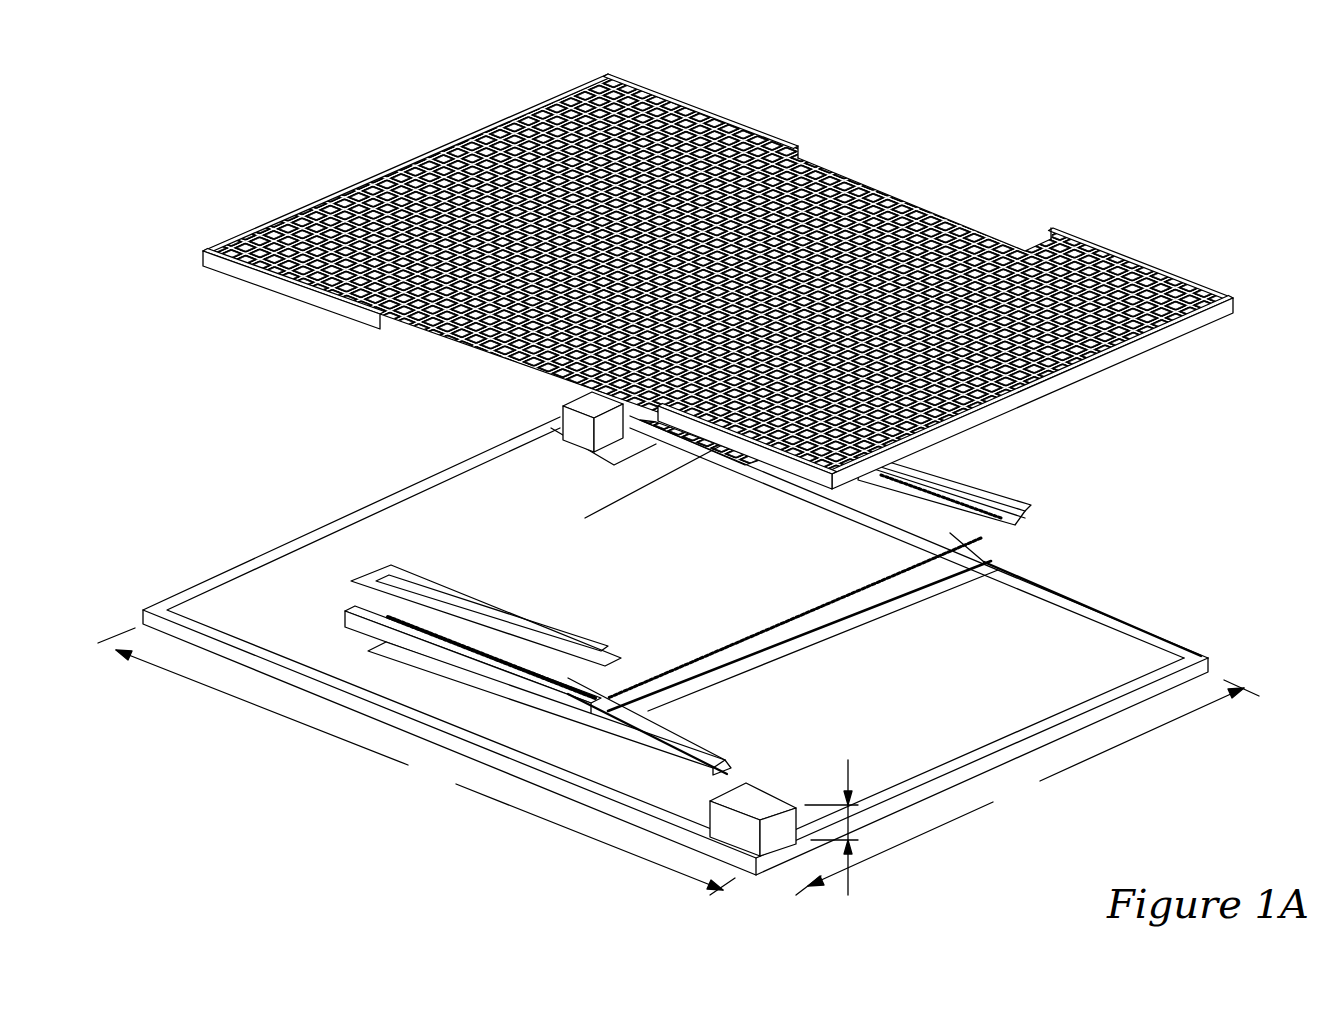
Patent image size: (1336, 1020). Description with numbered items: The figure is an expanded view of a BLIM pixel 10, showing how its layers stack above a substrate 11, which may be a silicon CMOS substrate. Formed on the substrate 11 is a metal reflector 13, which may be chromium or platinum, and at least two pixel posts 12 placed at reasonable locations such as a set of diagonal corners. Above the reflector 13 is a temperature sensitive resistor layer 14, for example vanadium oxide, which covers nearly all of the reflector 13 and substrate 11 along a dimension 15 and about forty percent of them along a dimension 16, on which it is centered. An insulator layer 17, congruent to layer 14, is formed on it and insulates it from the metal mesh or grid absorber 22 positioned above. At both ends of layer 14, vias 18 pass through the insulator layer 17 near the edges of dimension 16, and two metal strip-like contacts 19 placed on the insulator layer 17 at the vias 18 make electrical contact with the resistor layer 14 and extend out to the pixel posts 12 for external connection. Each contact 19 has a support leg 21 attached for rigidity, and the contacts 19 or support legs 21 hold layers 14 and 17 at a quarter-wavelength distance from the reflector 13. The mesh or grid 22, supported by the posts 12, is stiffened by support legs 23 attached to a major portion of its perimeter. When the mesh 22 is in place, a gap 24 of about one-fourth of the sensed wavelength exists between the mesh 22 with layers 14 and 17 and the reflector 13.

The BLIM pixel 10 is at (1016, 136).
The substrate 11 is at (1203, 650).
The pixel posts 12 is at (568, 401).
The metal reflector 13 is at (1093, 610).
The temperature sensitive resistor layer 14 is at (900, 581).
The dimension 15 is at (1027, 787).
The dimension 16 is at (416, 761).
The insulator layer 17 is at (973, 531).
The vias 18 is at (342, 603).
The metal strip-like contacts 19 is at (358, 566).
The support leg 21 is at (654, 742).
The metal mesh or grid absorber 22 is at (893, 193).
The support legs 23 is at (412, 142).
The gap 24 is at (833, 809).